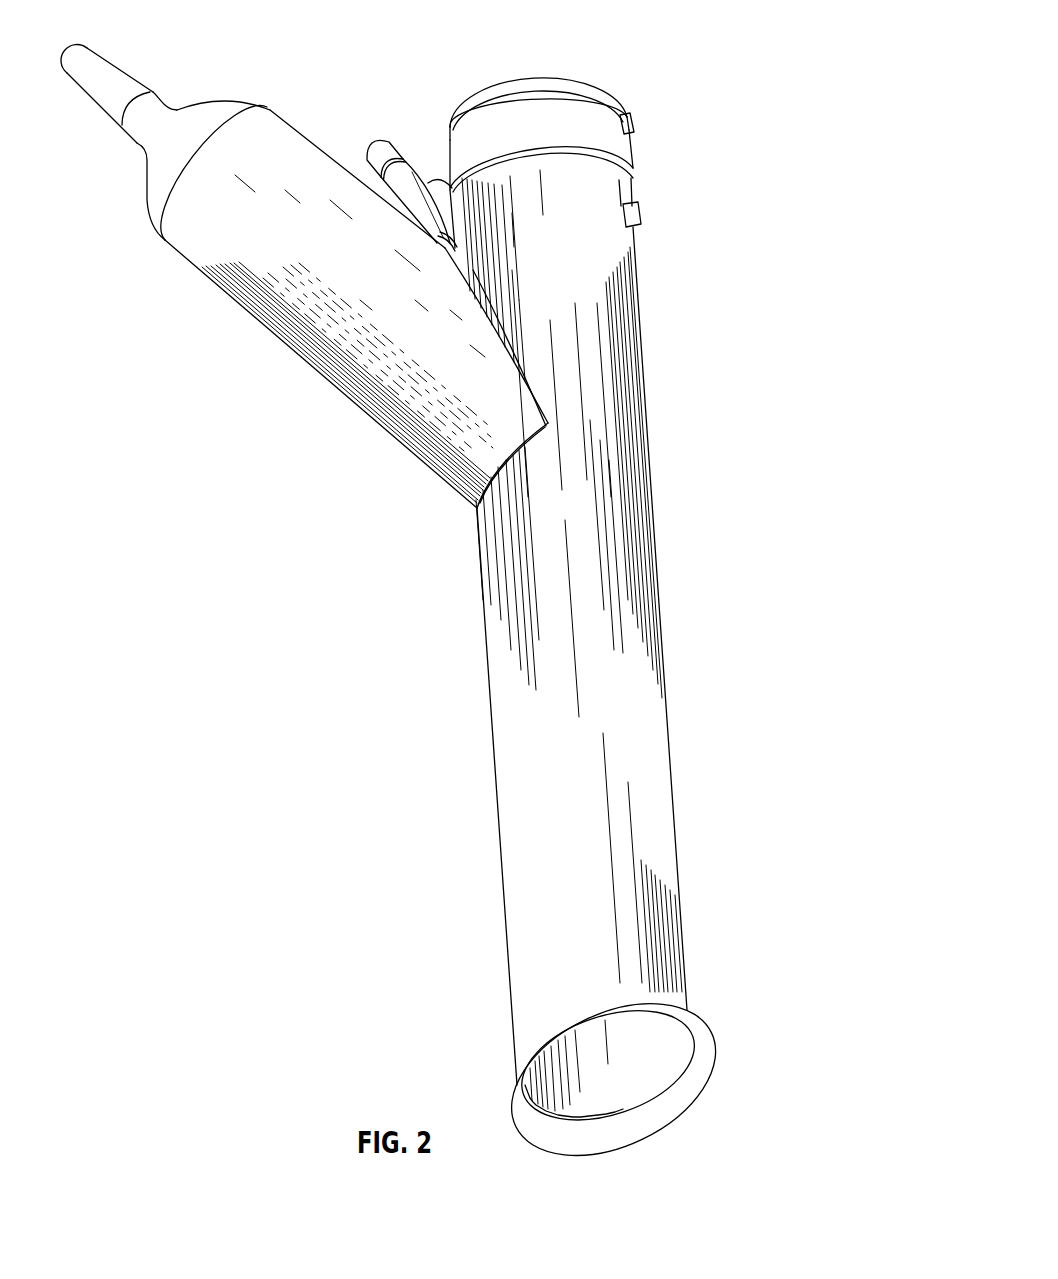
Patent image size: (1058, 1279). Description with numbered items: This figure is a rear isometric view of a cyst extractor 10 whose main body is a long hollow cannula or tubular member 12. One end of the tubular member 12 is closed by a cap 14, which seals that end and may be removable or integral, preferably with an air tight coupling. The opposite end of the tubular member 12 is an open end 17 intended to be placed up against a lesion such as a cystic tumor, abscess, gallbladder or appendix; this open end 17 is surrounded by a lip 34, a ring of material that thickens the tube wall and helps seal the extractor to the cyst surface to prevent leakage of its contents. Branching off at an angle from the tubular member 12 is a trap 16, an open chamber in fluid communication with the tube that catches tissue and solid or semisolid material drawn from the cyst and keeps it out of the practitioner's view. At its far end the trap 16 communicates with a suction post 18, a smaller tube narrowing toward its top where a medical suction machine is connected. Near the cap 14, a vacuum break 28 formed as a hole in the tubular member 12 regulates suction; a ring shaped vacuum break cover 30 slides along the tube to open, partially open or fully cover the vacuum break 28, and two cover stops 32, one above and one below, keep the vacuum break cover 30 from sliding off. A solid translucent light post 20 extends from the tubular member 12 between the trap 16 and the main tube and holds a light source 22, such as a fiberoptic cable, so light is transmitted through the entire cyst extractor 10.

The cyst extractor 10 is at (623, 33).
The tubular member 12 is at (638, 390).
The cap 14 is at (600, 86).
The trap 16 is at (242, 298).
The open end 17 is at (637, 1082).
The suction post 18 is at (97, 84).
The light post 20 is at (417, 170).
The light source 22 is at (372, 150).
The vacuum break 28 is at (632, 197).
The vacuum break cover 30 is at (628, 157).
The cover stop 32 is at (636, 124).
The lip 34 is at (515, 1087).